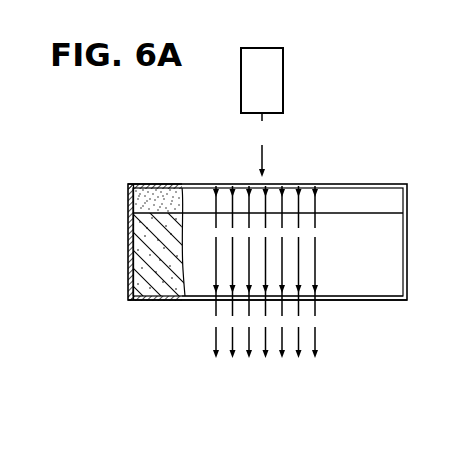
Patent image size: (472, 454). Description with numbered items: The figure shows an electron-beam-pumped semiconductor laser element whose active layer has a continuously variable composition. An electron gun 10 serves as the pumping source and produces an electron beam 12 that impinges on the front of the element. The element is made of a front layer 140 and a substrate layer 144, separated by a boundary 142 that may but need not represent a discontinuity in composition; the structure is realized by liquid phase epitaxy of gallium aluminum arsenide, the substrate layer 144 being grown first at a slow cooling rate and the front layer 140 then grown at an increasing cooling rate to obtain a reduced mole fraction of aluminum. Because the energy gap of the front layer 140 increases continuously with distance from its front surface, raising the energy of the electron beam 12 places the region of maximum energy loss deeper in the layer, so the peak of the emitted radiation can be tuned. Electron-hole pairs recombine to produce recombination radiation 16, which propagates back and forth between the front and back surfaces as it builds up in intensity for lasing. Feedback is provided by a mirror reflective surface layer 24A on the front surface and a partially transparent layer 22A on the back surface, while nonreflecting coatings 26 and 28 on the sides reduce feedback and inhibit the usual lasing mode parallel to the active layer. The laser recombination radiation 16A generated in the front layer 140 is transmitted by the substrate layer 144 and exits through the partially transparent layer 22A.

The electron gun 10 is at (281, 73).
The electron beam 12 is at (264, 132).
The recombination radiation 16 is at (316, 252).
The laser recombination radiation 16A is at (217, 333).
The partially transparent layer 22A is at (357, 298).
The mirror reflective surface layer 24A is at (130, 185).
The nonreflecting coating 26 is at (130, 290).
The nonreflecting coating 28 is at (408, 256).
The front layer 140 is at (131, 203).
The boundary 142 is at (133, 226).
The substrate layer 144 is at (134, 258).